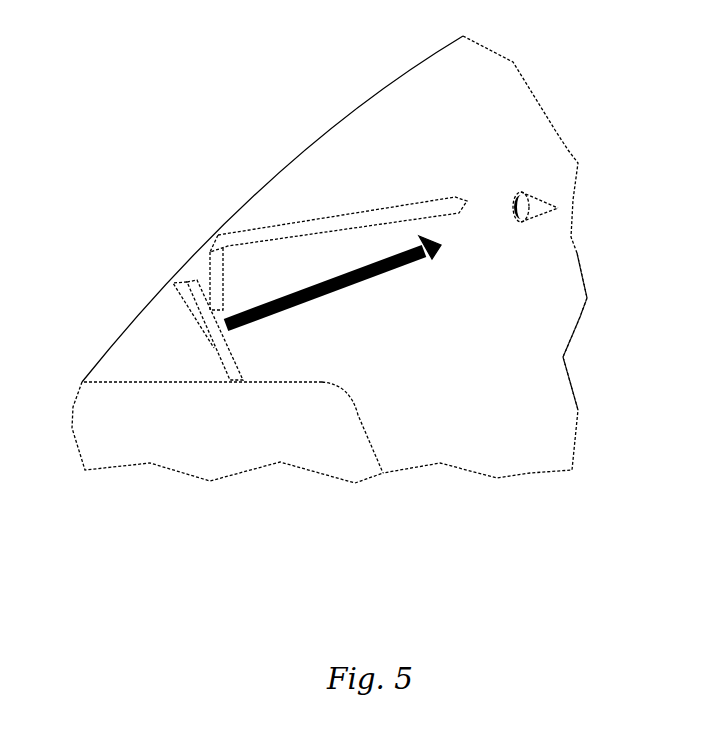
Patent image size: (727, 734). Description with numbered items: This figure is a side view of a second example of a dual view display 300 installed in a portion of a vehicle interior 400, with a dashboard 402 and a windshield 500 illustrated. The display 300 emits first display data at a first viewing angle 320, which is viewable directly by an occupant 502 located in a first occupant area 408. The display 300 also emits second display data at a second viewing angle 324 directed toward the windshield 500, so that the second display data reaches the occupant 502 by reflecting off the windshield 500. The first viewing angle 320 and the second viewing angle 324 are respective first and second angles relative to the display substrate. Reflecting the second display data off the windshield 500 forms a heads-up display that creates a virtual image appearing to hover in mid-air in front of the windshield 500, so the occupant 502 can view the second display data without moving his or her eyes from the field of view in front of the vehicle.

The dual view display 300 is at (213, 345).
The first viewing angle 320 is at (340, 290).
The second viewing angle 324 is at (328, 220).
The vehicle interior 400 is at (440, 79).
The dashboard 402 is at (263, 382).
The first occupant area 408 is at (543, 283).
The windshield 500 is at (313, 142).
The occupant 502 is at (551, 168).